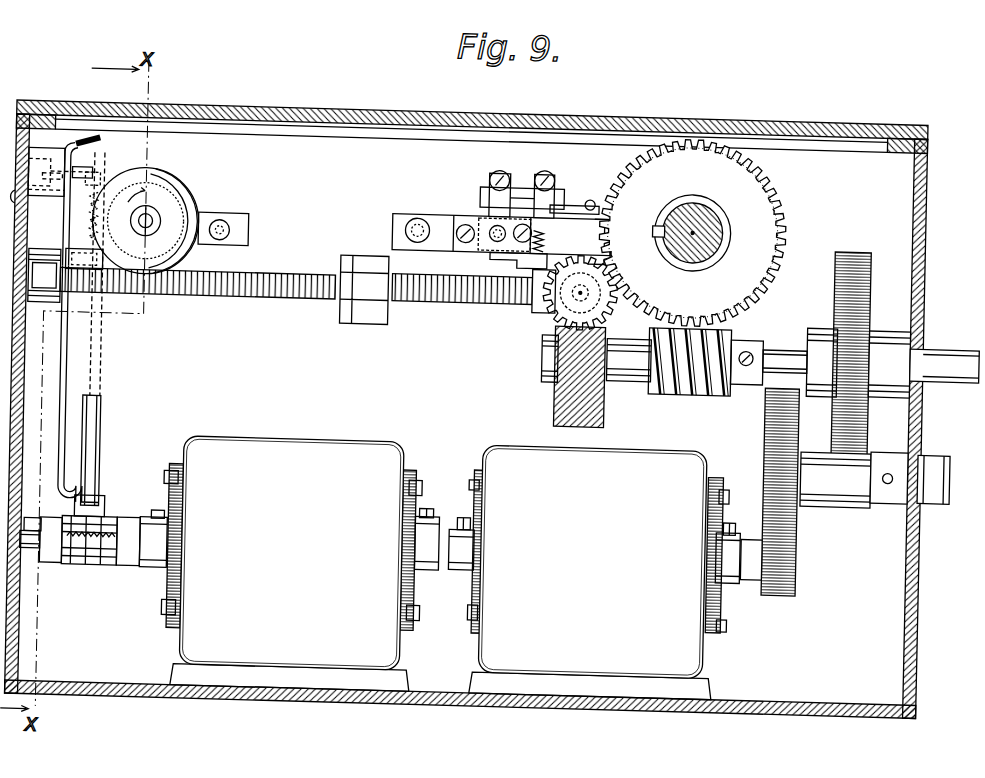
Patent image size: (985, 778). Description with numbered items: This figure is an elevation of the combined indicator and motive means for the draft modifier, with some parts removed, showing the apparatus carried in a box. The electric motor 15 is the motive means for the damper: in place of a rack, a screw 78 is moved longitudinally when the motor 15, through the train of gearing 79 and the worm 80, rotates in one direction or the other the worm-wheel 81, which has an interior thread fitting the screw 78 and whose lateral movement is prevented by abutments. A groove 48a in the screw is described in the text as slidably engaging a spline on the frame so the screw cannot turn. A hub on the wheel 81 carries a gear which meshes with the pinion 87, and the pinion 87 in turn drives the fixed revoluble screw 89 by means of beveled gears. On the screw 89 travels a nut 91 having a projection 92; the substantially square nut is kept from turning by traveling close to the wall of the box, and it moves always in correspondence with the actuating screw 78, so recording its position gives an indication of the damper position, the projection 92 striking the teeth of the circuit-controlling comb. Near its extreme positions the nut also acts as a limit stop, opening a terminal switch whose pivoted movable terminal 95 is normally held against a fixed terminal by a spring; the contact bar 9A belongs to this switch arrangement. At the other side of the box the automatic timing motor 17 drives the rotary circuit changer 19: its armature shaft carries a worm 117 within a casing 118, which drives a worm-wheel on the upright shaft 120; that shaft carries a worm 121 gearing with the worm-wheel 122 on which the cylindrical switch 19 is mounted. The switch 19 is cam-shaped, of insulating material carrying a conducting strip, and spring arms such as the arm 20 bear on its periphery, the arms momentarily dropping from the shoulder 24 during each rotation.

The contact bar 9A is at (559, 178).
The electric motor 15 is at (594, 572).
The automatic timing motor 17 is at (300, 563).
The rotary circuit changer 19 is at (182, 196).
The spring arm 20 is at (70, 349).
The shoulder 24 is at (113, 219).
The keyway 48a is at (656, 217).
The screw 78 is at (716, 211).
The train of gearing 79 is at (875, 247).
The worm 80 is at (709, 376).
The worm-wheel 81 is at (788, 211).
The pinion 87 is at (562, 305).
The fixed revoluble screw 89 is at (316, 292).
The nut 91 is at (448, 220).
The projection 92 is at (394, 267).
The movable terminal 95 is at (482, 184).
The worm 117 is at (109, 538).
The casing 118 is at (110, 561).
The upright shaft 120 is at (99, 375).
The worm 121 is at (106, 221).
The worm-wheel 122 is at (198, 213).